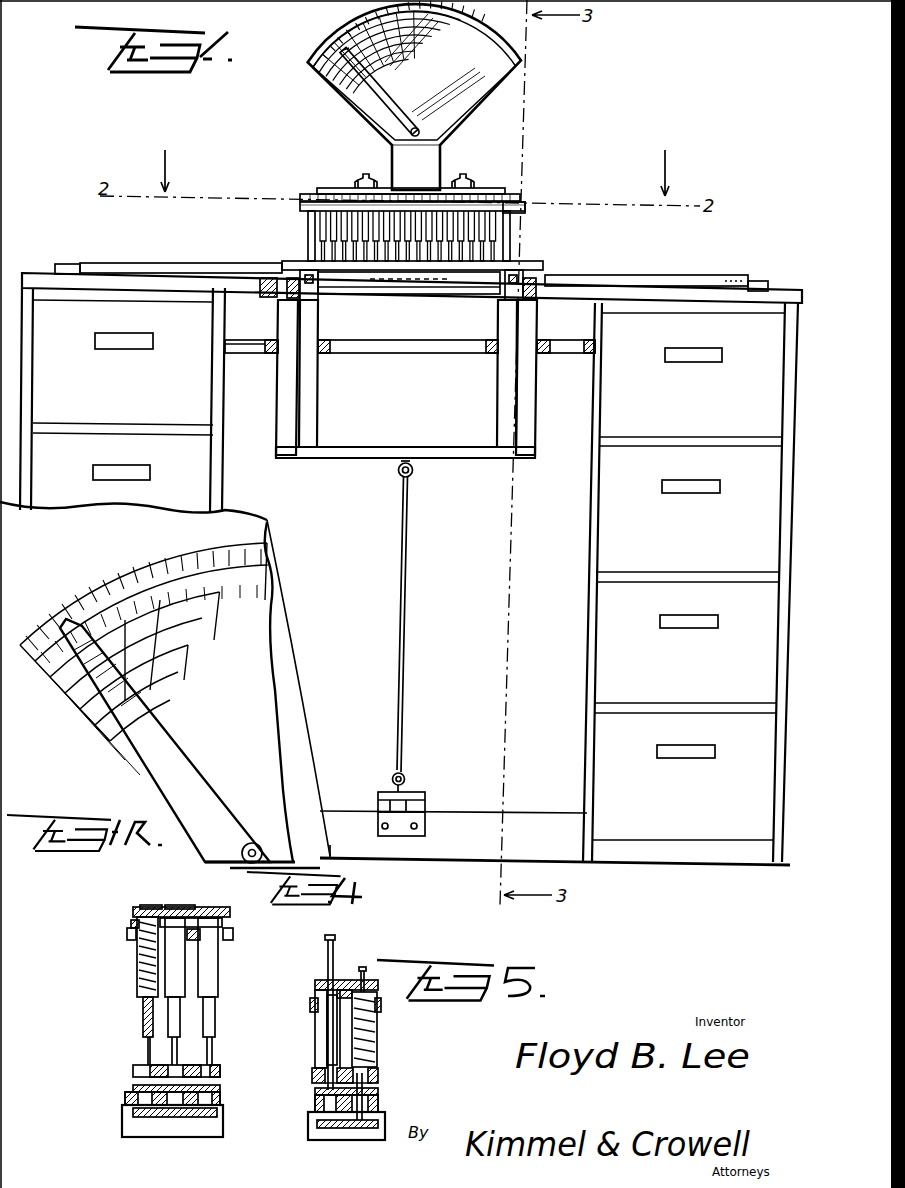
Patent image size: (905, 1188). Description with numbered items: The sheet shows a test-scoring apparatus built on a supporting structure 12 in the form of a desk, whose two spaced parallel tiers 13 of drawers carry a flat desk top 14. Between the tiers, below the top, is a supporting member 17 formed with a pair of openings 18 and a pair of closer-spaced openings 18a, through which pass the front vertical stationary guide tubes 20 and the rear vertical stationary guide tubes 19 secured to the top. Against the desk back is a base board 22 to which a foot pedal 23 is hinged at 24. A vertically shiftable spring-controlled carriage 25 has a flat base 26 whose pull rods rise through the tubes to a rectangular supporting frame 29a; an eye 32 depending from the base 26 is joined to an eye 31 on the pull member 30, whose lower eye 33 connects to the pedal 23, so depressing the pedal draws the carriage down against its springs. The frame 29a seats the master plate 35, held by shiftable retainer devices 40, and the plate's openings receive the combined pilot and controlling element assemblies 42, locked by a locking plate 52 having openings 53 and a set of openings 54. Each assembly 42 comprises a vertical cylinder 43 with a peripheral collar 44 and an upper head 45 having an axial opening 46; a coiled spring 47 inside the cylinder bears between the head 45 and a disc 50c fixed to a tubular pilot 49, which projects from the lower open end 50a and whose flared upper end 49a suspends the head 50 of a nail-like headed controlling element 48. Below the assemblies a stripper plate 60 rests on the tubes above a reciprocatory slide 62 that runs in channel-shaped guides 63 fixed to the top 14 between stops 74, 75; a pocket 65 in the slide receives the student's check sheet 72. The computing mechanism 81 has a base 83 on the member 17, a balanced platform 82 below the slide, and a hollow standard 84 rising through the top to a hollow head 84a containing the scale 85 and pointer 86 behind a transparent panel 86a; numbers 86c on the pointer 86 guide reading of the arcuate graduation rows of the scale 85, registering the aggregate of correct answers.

In FIG. 1, the supporting structure 12 is at (578, 742).
In FIG. 1, the tiers of drawers 13 is at (108, 498).
In FIG. 1, the desk top 14 is at (62, 282).
In FIG. 4, the desk top 14 is at (130, 1128).
In FIG. 5, the desk top 14 is at (367, 1138).
In FIG. 1, the supporting member 17 is at (240, 346).
In FIG. 1, the openings 18 is at (270, 352).
In FIG. 1, the openings 18a is at (328, 354).
In FIG. 1, the rear vertical stationary guide tubes 19 is at (316, 425).
In FIG. 1, the front vertical stationary guide tubes 20 is at (288, 266).
In FIG. 1, the base board 22 is at (345, 846).
In FIG. 1, the foot pedal 23 is at (428, 810).
In FIG. 1, the hinge 24 is at (426, 815).
In FIG. 1, the carriage 25 is at (359, 470).
In FIG. 1, the flat base 26 is at (479, 462).
In FIG. 1, the rectangular supporting frame 29a is at (525, 202).
In FIG. 1, the pull member 30 is at (409, 606).
In FIG. 1, the eye 31 is at (412, 477).
In FIG. 1, the eye 32 is at (409, 462).
In FIG. 1, the eye 33 is at (408, 778).
In FIG. 4, the master plate 35 is at (127, 935).
In FIG. 5, the master plate 35 is at (313, 1012).
In FIG. 12, the shiftable retainer devices 40 is at (262, 834).
In FIG. 4, the combined pilot and controlling element assembly 42 is at (234, 962).
In FIG. 1, the vertical cylinder 43 is at (515, 238).
In FIG. 4, the vertical cylinder 43 is at (140, 960).
In FIG. 5, the vertical cylinder 43 is at (372, 1032).
In FIG. 4, the peripheral collar 44 is at (222, 929).
In FIG. 5, the upper head 45 is at (376, 986).
In FIG. 5, the axial opening 46 is at (311, 1001).
In FIG. 4, the coiled spring 47 is at (128, 925).
In FIG. 5, the coiled spring 47 is at (378, 1022).
In FIG. 4, the headed controlling element 48 is at (212, 1040).
In FIG. 5, the headed controlling element 48 is at (334, 950).
In FIG. 4, the tubular pilot 49 is at (150, 1021).
In FIG. 5, the tubular pilot 49 is at (318, 1072).
In FIG. 5, the flared upper end 49a is at (345, 975).
In FIG. 5, the head 50 is at (336, 937).
In FIG. 5, the lower open end 50a is at (382, 1072).
In FIG. 4, the disc 50c is at (141, 1003).
In FIG. 5, the disc 50c is at (372, 1060).
In FIG. 1, the locking plate 52 is at (545, 203).
In FIG. 4, the locking plate 52 is at (131, 908).
In FIG. 5, the locking plate 52 is at (314, 987).
In FIG. 4, the openings 53 is at (174, 907).
In FIG. 4, the set of openings 54 is at (152, 906).
In FIG. 1, the stripper plate 60 is at (550, 256).
In FIG. 4, the stripper plate 60 is at (135, 1071).
In FIG. 5, the stripper plate 60 is at (380, 1076).
In FIG. 1, the reciprocatory slide 62 is at (192, 270).
In FIG. 4, the reciprocatory slide 62 is at (125, 1099).
In FIG. 5, the reciprocatory slide 62 is at (382, 1102).
In FIG. 1, the channel-shaped guides 63 is at (612, 278).
In FIG. 4, the pockets 65 is at (222, 1102).
In FIG. 4, the student's check sheet 72 is at (140, 1088).
In FIG. 5, the student's check sheet 72 is at (380, 1091).
In FIG. 1, the stop 74 is at (62, 265).
In FIG. 1, the stop 75 is at (757, 290).
In FIG. 1, the computing mechanism 81 is at (452, 160).
In FIG. 1, the platform 82 is at (362, 298).
In FIG. 4, the platform 82 is at (186, 1122).
In FIG. 5, the platform 82 is at (386, 1120).
In FIG. 1, the base 83 is at (495, 320).
In FIG. 1, the hollow standard 84 is at (432, 172).
In FIG. 1, the hollow head 84a is at (487, 130).
In FIG. 1, the scale 85 is at (455, 20).
In FIG. 12, the scale 85 is at (165, 604).
In FIG. 1, the pointer 86 is at (379, 91).
In FIG. 12, the pointer 86 is at (190, 770).
In FIG. 1, the transparent panel 86a is at (380, 103).
In FIG. 12, the numbers 86c is at (74, 716).